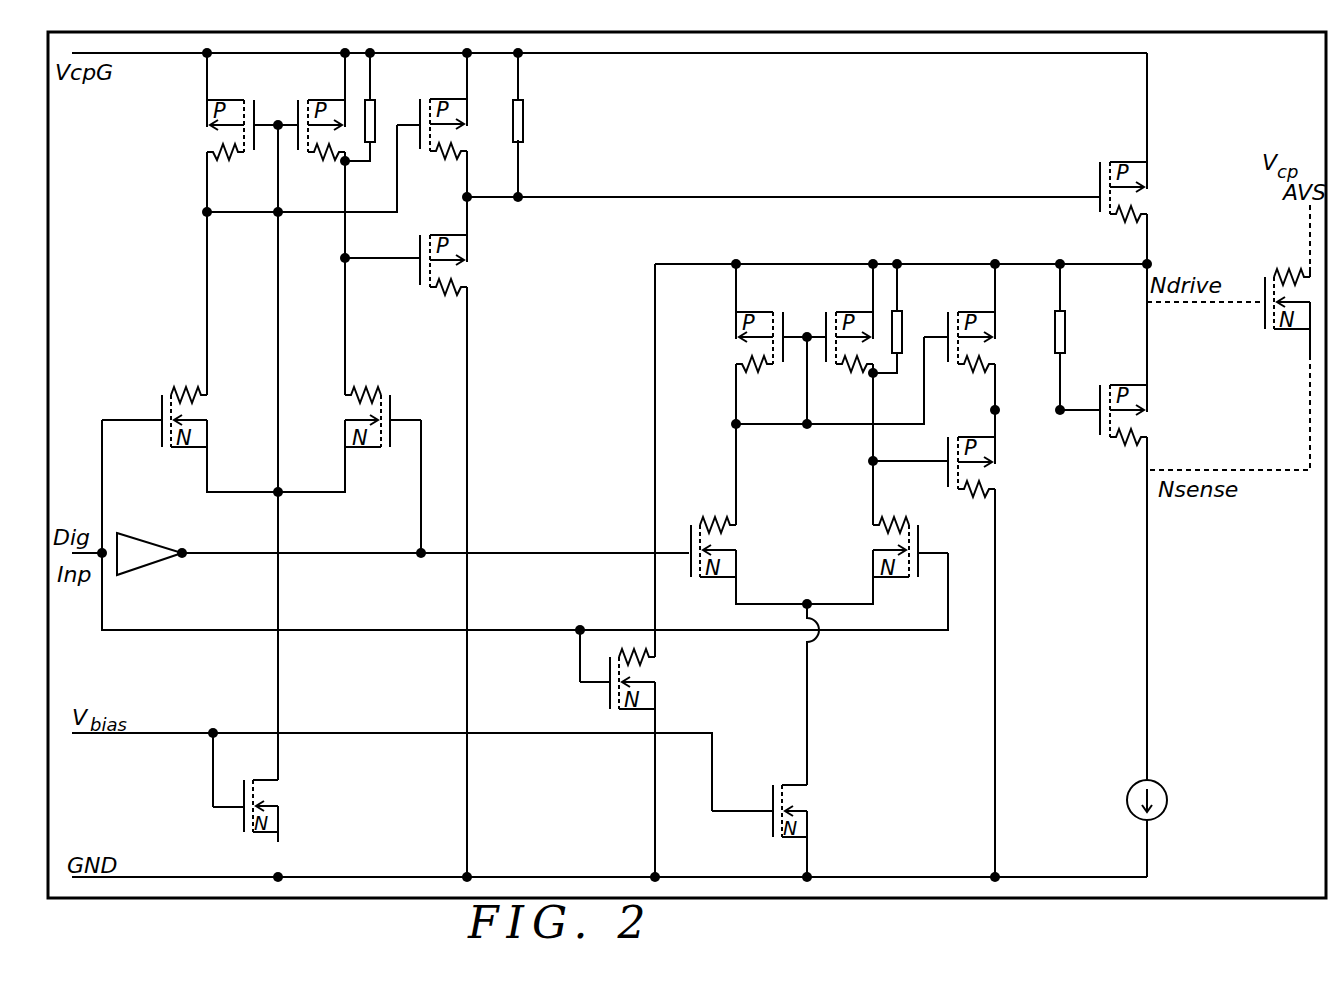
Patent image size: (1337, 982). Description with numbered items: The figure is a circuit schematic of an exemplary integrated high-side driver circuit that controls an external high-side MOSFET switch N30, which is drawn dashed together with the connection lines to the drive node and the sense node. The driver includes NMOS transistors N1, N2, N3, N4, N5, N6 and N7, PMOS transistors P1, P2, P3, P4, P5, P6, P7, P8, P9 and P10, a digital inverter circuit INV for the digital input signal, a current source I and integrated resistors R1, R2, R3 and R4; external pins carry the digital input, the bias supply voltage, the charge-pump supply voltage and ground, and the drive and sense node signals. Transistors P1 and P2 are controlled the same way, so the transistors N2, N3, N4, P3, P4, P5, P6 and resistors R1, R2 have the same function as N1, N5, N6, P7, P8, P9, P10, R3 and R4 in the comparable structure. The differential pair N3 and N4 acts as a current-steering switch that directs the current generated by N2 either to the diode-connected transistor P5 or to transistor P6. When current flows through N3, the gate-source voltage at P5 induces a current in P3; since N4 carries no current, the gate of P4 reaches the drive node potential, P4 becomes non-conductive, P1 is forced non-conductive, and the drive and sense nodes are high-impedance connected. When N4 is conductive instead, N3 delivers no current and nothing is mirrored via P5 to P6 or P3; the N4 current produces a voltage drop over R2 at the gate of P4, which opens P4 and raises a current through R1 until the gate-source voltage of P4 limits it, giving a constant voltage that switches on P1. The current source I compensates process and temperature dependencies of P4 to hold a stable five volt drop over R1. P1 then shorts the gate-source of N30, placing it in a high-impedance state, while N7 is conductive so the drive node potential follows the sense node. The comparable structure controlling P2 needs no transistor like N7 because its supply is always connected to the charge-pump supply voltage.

The PMOS transistor P1 is at (1121, 415).
The PMOS transistor P2 is at (1121, 192).
The PMOS transistor P3 is at (977, 342).
The PMOS transistor P4 is at (951, 467).
The PMOS transistor P5 is at (771, 357).
The PMOS transistor P6 is at (840, 357).
The PMOS transistor P7 is at (448, 134).
The PMOS transistor P8 is at (422, 265).
The PMOS transistor P9 is at (242, 144).
The PMOS transistor P10 is at (311, 144).
The NMOS transistor N1 is at (265, 811).
The NMOS transistor N2 is at (778, 816).
The NMOS transistor N3 is at (732, 555).
The NMOS transistor N4 is at (894, 555).
The NMOS transistor N5 is at (172, 423).
The NMOS transistor N6 is at (363, 423).
The NMOS transistor N7 is at (636, 684).
The high-side MOSFET switch N30 is at (1228, 309).
The resistor R1 is at (1081, 337).
The resistor R2 is at (904, 318).
The resistor R3 is at (536, 125).
The resistor R4 is at (376, 107).
The digital inverter circuit INV is at (173, 550).
The current source I is at (1135, 800).